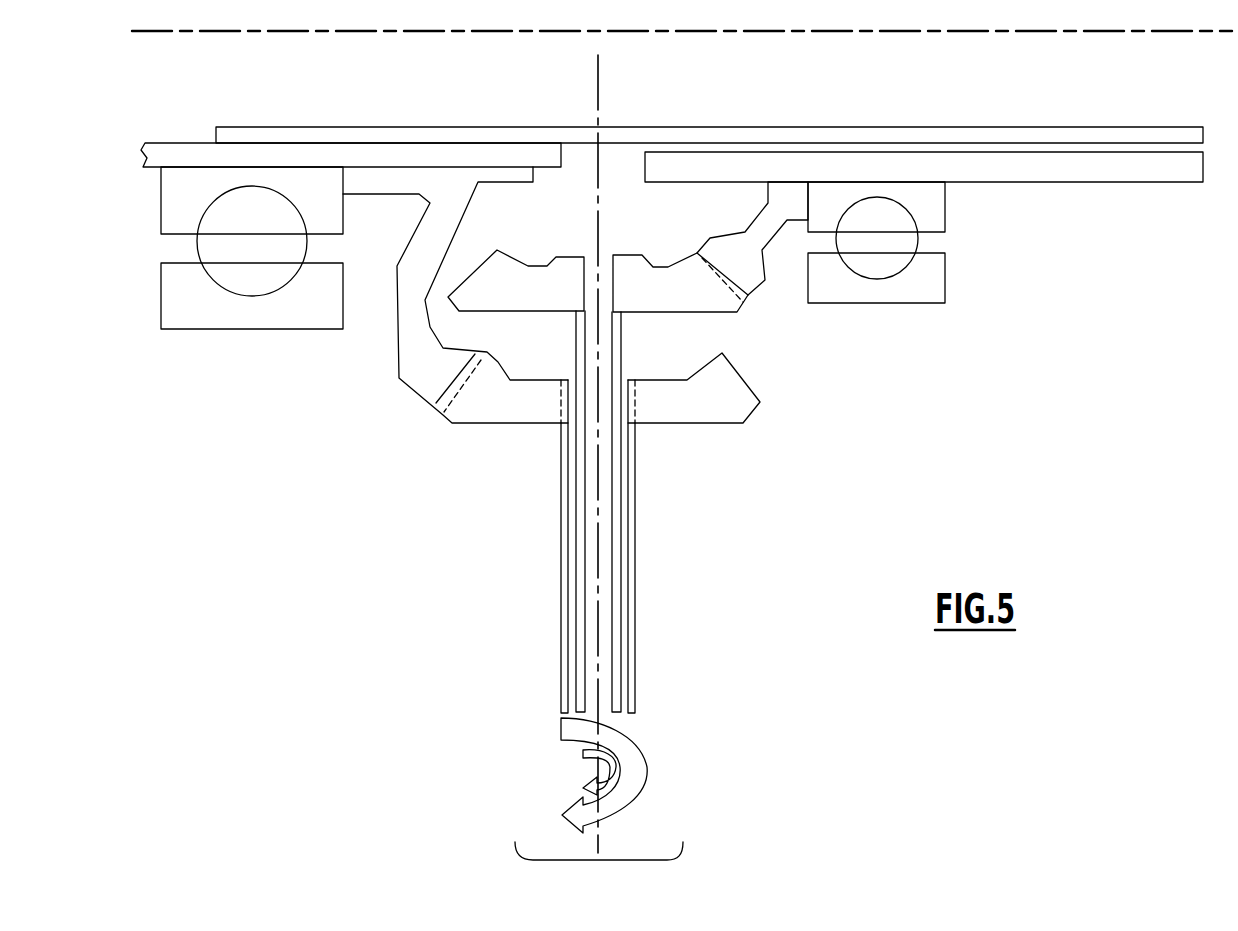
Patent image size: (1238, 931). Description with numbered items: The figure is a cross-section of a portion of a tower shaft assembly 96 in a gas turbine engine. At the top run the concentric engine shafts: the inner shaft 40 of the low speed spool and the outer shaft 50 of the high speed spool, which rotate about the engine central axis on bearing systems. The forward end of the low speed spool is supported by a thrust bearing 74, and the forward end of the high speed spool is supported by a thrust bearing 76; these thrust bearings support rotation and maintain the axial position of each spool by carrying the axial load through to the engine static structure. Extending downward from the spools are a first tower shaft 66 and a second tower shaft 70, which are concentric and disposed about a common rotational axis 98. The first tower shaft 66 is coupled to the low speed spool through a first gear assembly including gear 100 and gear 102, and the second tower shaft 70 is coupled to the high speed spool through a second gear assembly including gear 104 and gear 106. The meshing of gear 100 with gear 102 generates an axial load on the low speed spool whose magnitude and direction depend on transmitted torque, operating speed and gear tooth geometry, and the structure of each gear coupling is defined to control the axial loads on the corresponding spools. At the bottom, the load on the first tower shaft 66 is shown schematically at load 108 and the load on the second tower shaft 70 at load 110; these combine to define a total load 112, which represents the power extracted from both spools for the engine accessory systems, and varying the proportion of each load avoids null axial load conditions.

The inner shaft 40 is at (711, 127).
The outer shaft 50 is at (1052, 182).
The thrust bearing 74 is at (247, 330).
The thrust bearing 76 is at (920, 291).
The gear 100 is at (487, 425).
The gear 102 is at (415, 393).
The gear 104 is at (726, 312).
The gear 106 is at (734, 238).
The tower shaft assembly 96 is at (374, 695).
The first tower shaft 66 is at (560, 552).
The second tower shaft 70 is at (618, 617).
The common rotational axis 98 is at (598, 545).
The load 108 is at (636, 797).
The load 110 is at (583, 753).
The total load 112 is at (617, 860).